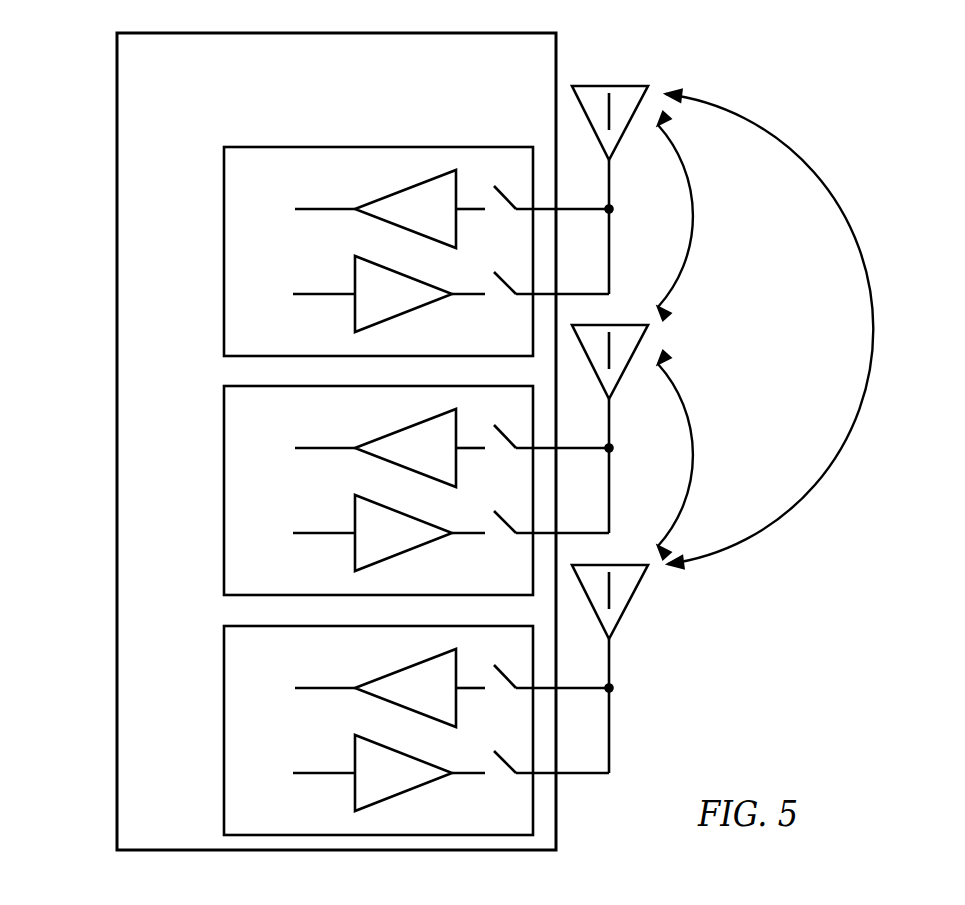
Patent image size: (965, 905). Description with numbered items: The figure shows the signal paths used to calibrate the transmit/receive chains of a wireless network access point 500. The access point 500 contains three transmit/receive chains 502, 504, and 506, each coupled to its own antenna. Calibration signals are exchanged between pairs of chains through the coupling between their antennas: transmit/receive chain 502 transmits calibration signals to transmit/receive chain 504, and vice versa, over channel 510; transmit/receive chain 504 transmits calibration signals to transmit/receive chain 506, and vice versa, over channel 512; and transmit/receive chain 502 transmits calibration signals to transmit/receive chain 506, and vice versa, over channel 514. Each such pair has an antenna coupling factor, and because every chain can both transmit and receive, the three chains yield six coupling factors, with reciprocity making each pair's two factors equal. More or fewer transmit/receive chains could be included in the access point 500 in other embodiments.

The access point 500 is at (117, 682).
The transmit/receive chain 502 is at (224, 281).
The transmit/receive chain 504 is at (224, 511).
The transmit/receive chain 506 is at (224, 760).
The channel 510 is at (693, 217).
The channel 512 is at (693, 457).
The channel 514 is at (873, 381).